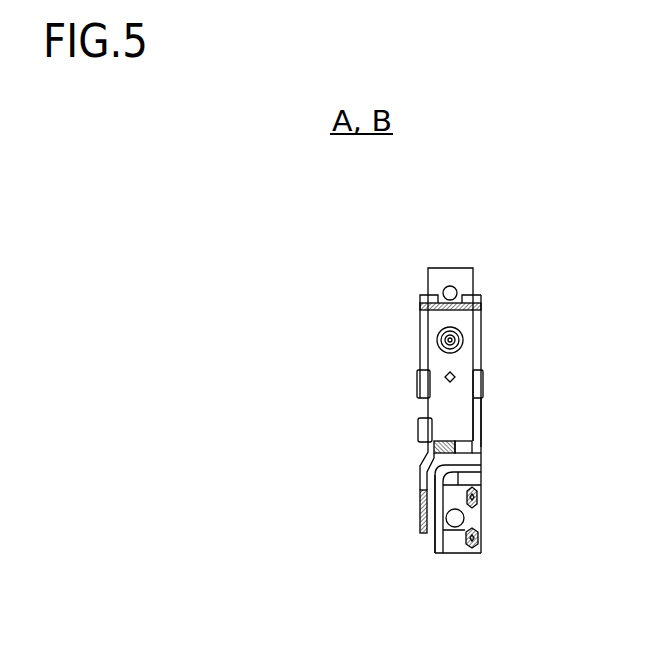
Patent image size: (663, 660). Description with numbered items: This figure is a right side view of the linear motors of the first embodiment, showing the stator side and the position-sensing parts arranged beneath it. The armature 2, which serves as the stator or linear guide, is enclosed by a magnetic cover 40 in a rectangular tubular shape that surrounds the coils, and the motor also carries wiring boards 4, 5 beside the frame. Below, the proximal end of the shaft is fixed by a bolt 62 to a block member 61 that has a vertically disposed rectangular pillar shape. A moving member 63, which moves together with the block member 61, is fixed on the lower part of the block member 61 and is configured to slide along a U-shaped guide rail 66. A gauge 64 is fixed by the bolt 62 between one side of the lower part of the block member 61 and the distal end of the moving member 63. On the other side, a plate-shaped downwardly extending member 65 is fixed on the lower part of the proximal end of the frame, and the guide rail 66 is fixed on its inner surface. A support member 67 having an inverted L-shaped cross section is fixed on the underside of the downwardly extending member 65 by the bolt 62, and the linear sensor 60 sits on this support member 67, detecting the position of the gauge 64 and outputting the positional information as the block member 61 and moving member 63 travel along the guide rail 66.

The armature 2 is at (410, 310).
The wiring board 4 is at (470, 273).
The wiring board 5 is at (483, 383).
The magnetic cover 40 is at (418, 348).
The linear sensor 60 is at (482, 550).
The block member 61 is at (470, 360).
The bolt 62 is at (482, 312).
The moving member 63 is at (420, 450).
The gauge 64 is at (420, 493).
The downwardly extending member 65 is at (482, 428).
The guide rail 66 is at (480, 453).
The support member 67 is at (433, 537).